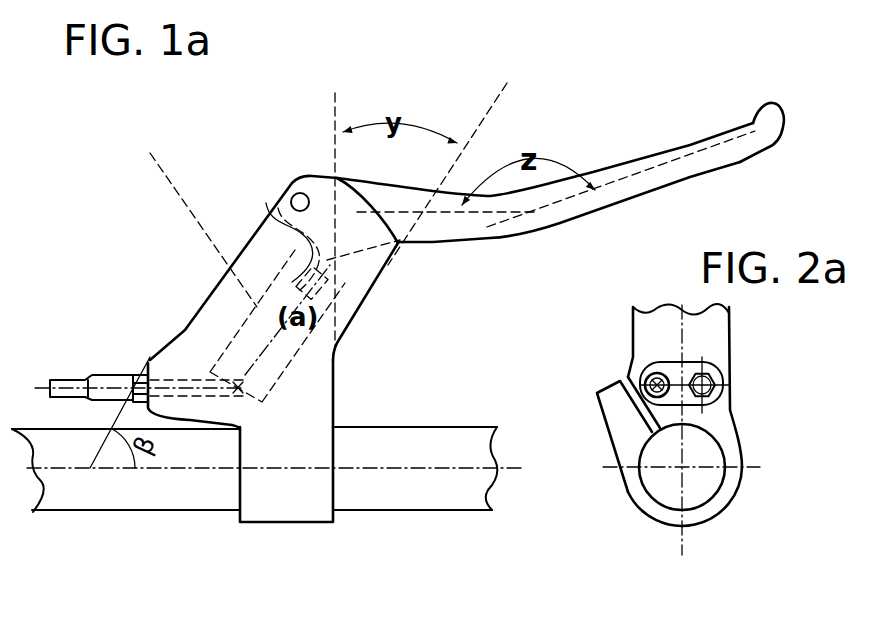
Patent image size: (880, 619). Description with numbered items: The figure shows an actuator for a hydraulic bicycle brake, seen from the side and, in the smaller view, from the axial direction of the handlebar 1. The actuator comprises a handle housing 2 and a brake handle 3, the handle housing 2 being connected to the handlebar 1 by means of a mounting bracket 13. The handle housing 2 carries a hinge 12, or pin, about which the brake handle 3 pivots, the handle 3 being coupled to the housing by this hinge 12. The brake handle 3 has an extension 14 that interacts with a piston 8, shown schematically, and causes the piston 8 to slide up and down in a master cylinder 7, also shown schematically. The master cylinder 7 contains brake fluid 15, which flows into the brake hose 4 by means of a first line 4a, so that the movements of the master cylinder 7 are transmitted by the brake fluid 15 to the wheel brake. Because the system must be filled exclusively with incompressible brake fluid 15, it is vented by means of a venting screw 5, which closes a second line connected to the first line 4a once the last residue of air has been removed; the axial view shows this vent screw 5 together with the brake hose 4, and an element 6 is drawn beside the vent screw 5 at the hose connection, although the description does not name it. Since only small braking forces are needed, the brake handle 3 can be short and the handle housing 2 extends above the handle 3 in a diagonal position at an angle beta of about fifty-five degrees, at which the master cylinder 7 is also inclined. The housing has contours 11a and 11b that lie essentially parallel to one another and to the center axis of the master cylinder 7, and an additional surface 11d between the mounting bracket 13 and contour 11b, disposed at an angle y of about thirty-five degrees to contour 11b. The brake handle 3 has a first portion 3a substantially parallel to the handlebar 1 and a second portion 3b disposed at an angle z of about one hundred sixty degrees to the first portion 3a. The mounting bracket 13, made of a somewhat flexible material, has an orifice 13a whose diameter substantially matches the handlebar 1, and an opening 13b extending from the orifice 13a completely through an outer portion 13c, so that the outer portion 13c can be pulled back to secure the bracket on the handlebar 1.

In FIG. 1a, the handlebar 1 is at (73, 492).
In FIG. 1a, the handle housing 2 is at (307, 387).
In FIG. 1a, the brake handle 3 is at (628, 178).
In FIG. 1a, the first portion 3a is at (413, 190).
In FIG. 1a, the second portion 3b is at (700, 140).
In FIG. 1a, the brake hose 4 is at (70, 380).
In FIG. 2a, the brake hose 4 is at (727, 383).
In FIG. 1a, the first line 4a is at (175, 392).
In FIG. 2a, the venting screw 5 is at (647, 373).
In FIG. 1a, the nut 6 is at (138, 372).
In FIG. 2a, the nut 6 is at (713, 370).
In FIG. 1a, the master cylinder 7 is at (200, 211).
In FIG. 1a, the piston 8 is at (265, 205).
In FIG. 1a, the contour 11a is at (240, 250).
In FIG. 1a, the contour 11b is at (370, 293).
In FIG. 1a, the additional surface 11d is at (335, 410).
In FIG. 1a, the hinge 12 is at (295, 193).
In FIG. 1a, the mounting bracket 13 is at (285, 508).
In FIG. 2a, the mounting bracket 13 is at (688, 522).
In FIG. 2a, the orifice 13a is at (642, 492).
In FIG. 2a, the opening 13b is at (645, 413).
In FIG. 2a, the outer portion 13c is at (618, 413).
In FIG. 1a, the extension 14 is at (398, 243).
In FIG. 1a, the brake fluid 15 is at (280, 352).